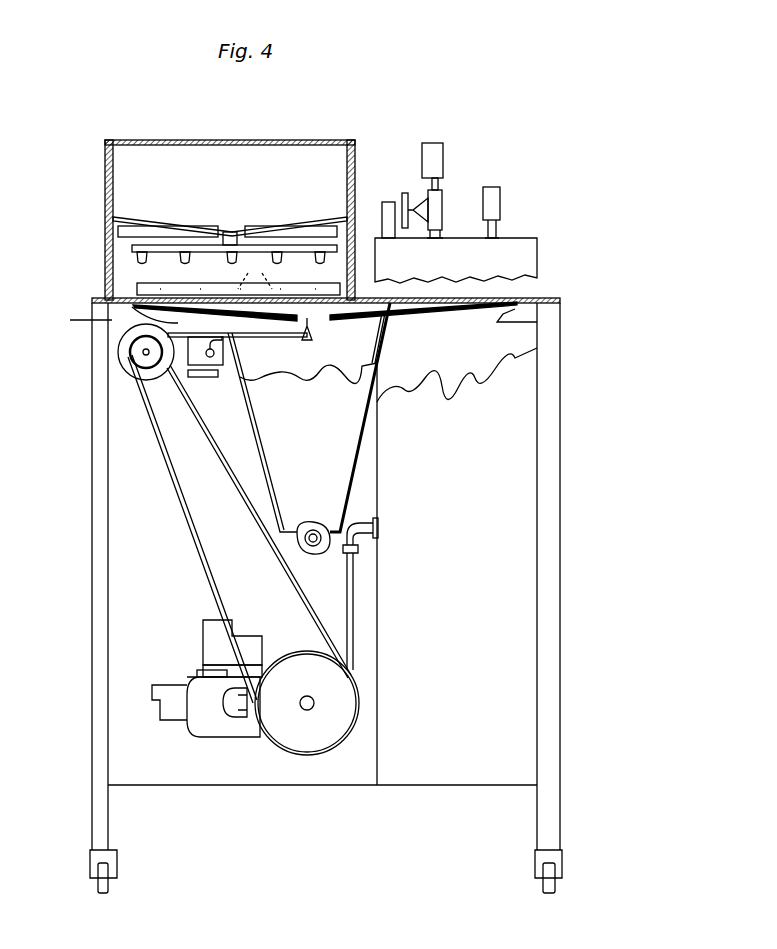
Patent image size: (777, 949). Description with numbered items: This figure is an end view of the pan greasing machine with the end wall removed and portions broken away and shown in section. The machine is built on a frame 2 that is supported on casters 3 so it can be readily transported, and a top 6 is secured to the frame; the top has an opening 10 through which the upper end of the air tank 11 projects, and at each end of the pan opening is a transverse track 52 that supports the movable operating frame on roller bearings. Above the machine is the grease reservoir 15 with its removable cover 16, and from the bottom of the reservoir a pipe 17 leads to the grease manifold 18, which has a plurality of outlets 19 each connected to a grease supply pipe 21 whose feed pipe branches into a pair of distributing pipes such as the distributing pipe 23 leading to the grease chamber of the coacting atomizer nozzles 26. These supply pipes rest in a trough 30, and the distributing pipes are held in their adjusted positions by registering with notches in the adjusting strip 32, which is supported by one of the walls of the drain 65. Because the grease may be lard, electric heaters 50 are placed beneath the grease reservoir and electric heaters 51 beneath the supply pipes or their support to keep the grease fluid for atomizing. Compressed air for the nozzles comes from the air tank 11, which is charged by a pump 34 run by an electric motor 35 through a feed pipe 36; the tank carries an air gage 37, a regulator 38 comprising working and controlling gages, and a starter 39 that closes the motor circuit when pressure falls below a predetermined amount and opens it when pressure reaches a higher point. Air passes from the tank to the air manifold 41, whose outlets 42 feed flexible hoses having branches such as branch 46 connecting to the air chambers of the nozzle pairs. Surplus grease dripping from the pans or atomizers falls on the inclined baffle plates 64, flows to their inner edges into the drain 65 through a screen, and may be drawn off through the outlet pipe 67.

The frame 2 is at (112, 803).
The casters 3 is at (118, 866).
The top 6 is at (505, 300).
The opening 10 is at (474, 300).
The air tank 11 is at (520, 245).
The grease reservoir 15 is at (113, 187).
The removable cover 16 is at (128, 141).
The pipe 17 is at (240, 233).
The grease manifold 18 is at (132, 248).
The outlets 19 is at (138, 258).
The grease supply pipe 21 is at (195, 362).
The distributing pipe 23 is at (281, 338).
The atomizer nozzles 26 is at (307, 341).
The trough 30 is at (142, 356).
The adjusting strip 32 is at (224, 346).
The pump 34 is at (220, 725).
The electric motor 35 is at (124, 362).
The feed pipe 36 is at (355, 636).
The air gage 37 is at (501, 201).
The regulator 38 is at (436, 196).
The starter 39 is at (389, 202).
The air manifold 41 is at (285, 299).
The outlets 42 is at (254, 273).
The branch 46 is at (289, 338).
The electric heaters 50 is at (130, 228).
The electric heaters 51 is at (211, 378).
The transverse track 52 is at (578, 320).
The baffle plates 64 is at (330, 318).
The drain 65 is at (358, 462).
The outlet pipe 67 is at (314, 530).